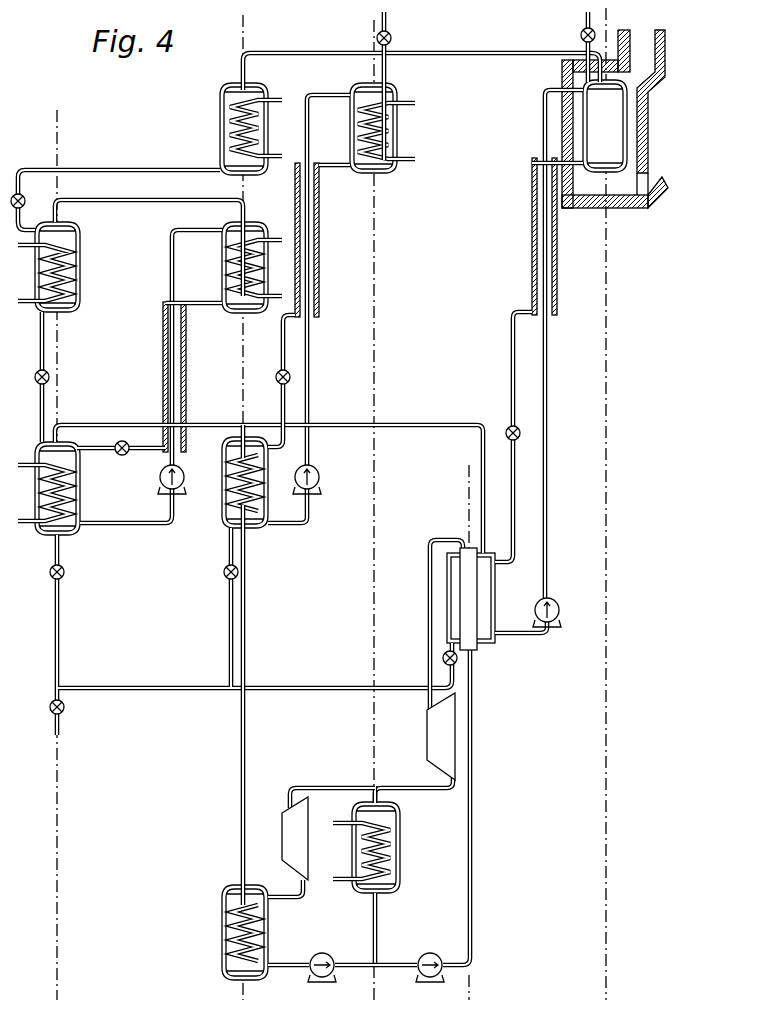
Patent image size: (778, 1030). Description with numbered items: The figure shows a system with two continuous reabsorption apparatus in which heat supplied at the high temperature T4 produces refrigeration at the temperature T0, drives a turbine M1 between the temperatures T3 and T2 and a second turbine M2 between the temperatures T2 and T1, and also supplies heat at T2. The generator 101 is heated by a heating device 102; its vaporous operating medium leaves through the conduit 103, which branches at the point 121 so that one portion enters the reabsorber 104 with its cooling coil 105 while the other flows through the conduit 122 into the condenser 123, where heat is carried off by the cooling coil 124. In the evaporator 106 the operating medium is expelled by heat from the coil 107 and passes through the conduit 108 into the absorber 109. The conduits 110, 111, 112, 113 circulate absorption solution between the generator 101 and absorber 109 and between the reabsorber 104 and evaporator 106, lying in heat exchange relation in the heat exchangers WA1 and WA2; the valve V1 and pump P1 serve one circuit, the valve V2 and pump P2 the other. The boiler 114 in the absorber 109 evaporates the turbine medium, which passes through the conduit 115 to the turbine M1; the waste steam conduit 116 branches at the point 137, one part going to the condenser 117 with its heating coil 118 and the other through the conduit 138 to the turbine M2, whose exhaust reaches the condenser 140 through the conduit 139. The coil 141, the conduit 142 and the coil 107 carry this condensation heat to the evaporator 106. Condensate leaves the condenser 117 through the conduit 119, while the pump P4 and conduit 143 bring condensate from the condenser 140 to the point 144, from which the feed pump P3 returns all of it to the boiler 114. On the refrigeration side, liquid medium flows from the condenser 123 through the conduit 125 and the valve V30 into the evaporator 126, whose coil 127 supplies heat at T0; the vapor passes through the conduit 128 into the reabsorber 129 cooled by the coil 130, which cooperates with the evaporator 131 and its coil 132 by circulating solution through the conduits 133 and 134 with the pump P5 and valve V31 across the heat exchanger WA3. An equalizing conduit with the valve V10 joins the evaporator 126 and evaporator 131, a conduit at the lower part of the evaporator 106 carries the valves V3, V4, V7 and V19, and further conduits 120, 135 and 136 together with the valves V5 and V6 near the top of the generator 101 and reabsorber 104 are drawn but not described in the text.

The generator 101 is at (580, 112).
The heating device 102 is at (612, 200).
The conduit 103 is at (498, 48).
The reabsorber 104 is at (396, 90).
The cooling coil 105 is at (385, 133).
The evaporator 106 is at (224, 517).
The coil 107 is at (255, 497).
The conduit 108 is at (432, 423).
The absorber 109 is at (496, 582).
The conduit 110 is at (548, 90).
The conduit 111 is at (547, 172).
The conduit 112 is at (317, 86).
The conduit 113 is at (329, 167).
The boiler 114 is at (472, 613).
The conduit 115 is at (430, 606).
The waste steam conduit 116 is at (408, 781).
The condenser 117 is at (400, 835).
The coil 118 is at (392, 856).
The conduit 119 is at (378, 925).
The line 120 is at (183, 692).
The branch point 121 is at (378, 52).
The conduit 122 is at (306, 48).
The condenser 123 is at (220, 103).
The cooling coil 124 is at (230, 136).
The conduit 125 is at (129, 172).
The evaporator 126 is at (82, 255).
The coil 127 is at (62, 280).
The conduit 128 is at (152, 202).
The reabsorber 129 is at (222, 253).
The cooling water coil 130 is at (240, 284).
The evaporator 131 is at (80, 496).
The coil 132 is at (62, 510).
The conduit 133 is at (155, 527).
The conduit 134 is at (143, 446).
The line 135 is at (202, 423).
The line 136 is at (245, 425).
The branch point 137 is at (368, 788).
The conduit 138 is at (315, 784).
The conduit 139 is at (296, 900).
The condenser 140 is at (222, 916).
The coil 141 is at (238, 945).
The conduit 142 is at (240, 787).
The conduit 143 is at (350, 963).
The junction point 144 is at (380, 963).
The valve V1 is at (523, 435).
The valve V2 is at (272, 381).
The valve V3 is at (219, 577).
The valve V4 is at (458, 663).
The valve V5 is at (576, 47).
The valve V6 is at (395, 40).
The valve V7 is at (69, 577).
The valve V10 is at (61, 379).
The valve V19 is at (72, 714).
The valve V30 is at (33, 205).
The valve V31 is at (127, 460).
The pump P1 is at (540, 615).
The pump P2 is at (303, 489).
The feed pump P3 is at (430, 982).
The pump P4 is at (322, 982).
The pump P5 is at (181, 474).
The heat exchanger WA1 is at (560, 378).
The heat exchanger WA2 is at (325, 314).
The heat exchanger WA3 is at (192, 347).
The turbine M1 is at (440, 731).
The turbine M2 is at (283, 838).
The refrigeration temperature T0 is at (55, 569).
The temperature level T1 is at (244, 521).
The temperature level T2 is at (374, 524).
The temperature level T3 is at (467, 746).
The heating temperature T4 is at (605, 515).